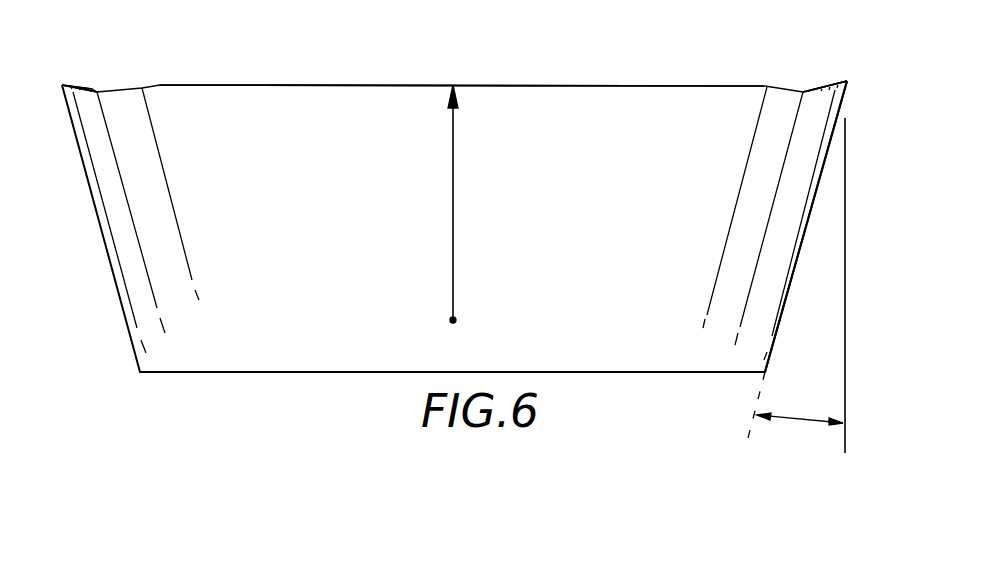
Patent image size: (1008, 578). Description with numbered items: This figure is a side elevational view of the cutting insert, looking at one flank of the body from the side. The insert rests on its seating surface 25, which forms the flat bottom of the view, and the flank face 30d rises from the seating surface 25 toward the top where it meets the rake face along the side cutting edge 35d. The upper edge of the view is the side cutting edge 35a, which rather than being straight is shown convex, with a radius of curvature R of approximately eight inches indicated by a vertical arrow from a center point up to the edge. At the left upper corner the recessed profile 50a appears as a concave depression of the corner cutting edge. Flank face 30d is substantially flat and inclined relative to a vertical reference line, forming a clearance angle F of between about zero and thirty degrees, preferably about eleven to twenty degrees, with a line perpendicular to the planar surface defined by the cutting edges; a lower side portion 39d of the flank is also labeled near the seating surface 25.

The seating surface 25 is at (257, 373).
The recessed profile 50a is at (86, 86).
The side cutting edge 35a is at (310, 85).
The side cutting edge 35d is at (847, 81).
The flank face 30d is at (797, 258).
The lower side portion 39d is at (780, 322).
The clearance angle F is at (802, 426).
The radius of curvature R is at (456, 318).